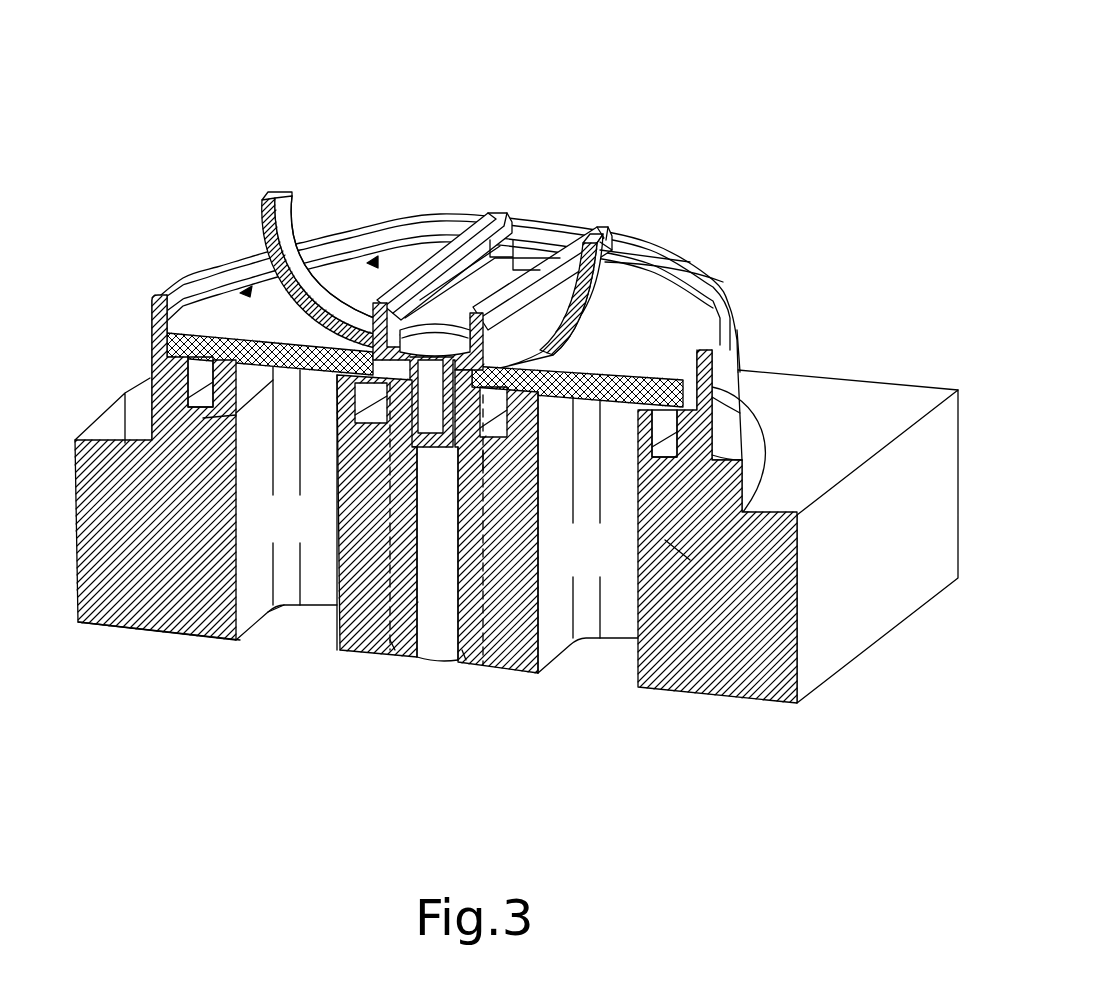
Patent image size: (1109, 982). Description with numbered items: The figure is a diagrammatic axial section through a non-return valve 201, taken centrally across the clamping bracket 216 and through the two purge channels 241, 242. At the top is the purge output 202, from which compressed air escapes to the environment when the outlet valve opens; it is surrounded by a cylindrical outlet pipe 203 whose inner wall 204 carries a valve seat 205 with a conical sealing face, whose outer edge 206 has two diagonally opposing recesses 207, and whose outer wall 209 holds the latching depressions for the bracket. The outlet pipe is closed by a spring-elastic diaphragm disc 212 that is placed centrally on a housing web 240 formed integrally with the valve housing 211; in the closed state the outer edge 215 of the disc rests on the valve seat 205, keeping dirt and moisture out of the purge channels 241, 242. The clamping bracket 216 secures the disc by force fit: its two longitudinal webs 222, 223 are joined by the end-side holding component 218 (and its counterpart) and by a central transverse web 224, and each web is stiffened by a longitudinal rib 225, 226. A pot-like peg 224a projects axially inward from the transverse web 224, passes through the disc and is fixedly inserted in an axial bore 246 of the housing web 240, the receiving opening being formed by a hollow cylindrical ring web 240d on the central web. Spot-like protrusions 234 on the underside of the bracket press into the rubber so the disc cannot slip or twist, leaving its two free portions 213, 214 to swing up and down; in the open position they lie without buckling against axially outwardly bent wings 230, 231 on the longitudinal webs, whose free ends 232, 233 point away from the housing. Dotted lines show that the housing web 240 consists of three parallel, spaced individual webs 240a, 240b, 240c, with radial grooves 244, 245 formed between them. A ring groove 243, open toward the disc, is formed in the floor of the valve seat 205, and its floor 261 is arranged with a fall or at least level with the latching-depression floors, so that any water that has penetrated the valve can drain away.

The non-return valve 201 is at (820, 137).
The purge output 202 is at (515, 137).
The outlet pipe 203 is at (748, 374).
The inner wall 204 is at (203, 288).
The valve seat 205 is at (253, 292).
The outer edge 206 is at (740, 356).
The recess 207 is at (608, 246).
The outer wall 209 is at (725, 393).
The valve housing 211 is at (180, 578).
The diaphragm disc 212 is at (153, 334).
The free portion 213 is at (238, 334).
The free portion 214 is at (630, 339).
The outer edge 215 is at (734, 413).
The clamping bracket 216 is at (366, 290).
The holding component 218 is at (545, 237).
The longitudinal web 222 is at (449, 275).
The longitudinal web 223 is at (725, 282).
The transverse web 224 is at (436, 322).
The peg 224a is at (430, 452).
The longitudinal rib 225 is at (497, 243).
The longitudinal rib 226 is at (592, 228).
The wing 230 is at (291, 230).
The wing 231 is at (603, 260).
The free end 232 is at (268, 195).
The free end 233 is at (586, 234).
The spot-like protrusion 234 is at (595, 382).
The housing web 240 is at (566, 650).
The first individual web 240a is at (282, 604).
The second individual web 240b is at (393, 642).
The third individual web 240c is at (546, 445).
The hollow cylindrical ring web 240d is at (160, 283).
The purge channel 241 is at (568, 564).
The purge channel 242 is at (270, 532).
The ring groove 243 is at (200, 378).
The radial groove 244 is at (333, 600).
The radial groove 245 is at (493, 452).
The axial bore 246 is at (440, 647).
The floor 261 is at (205, 416).